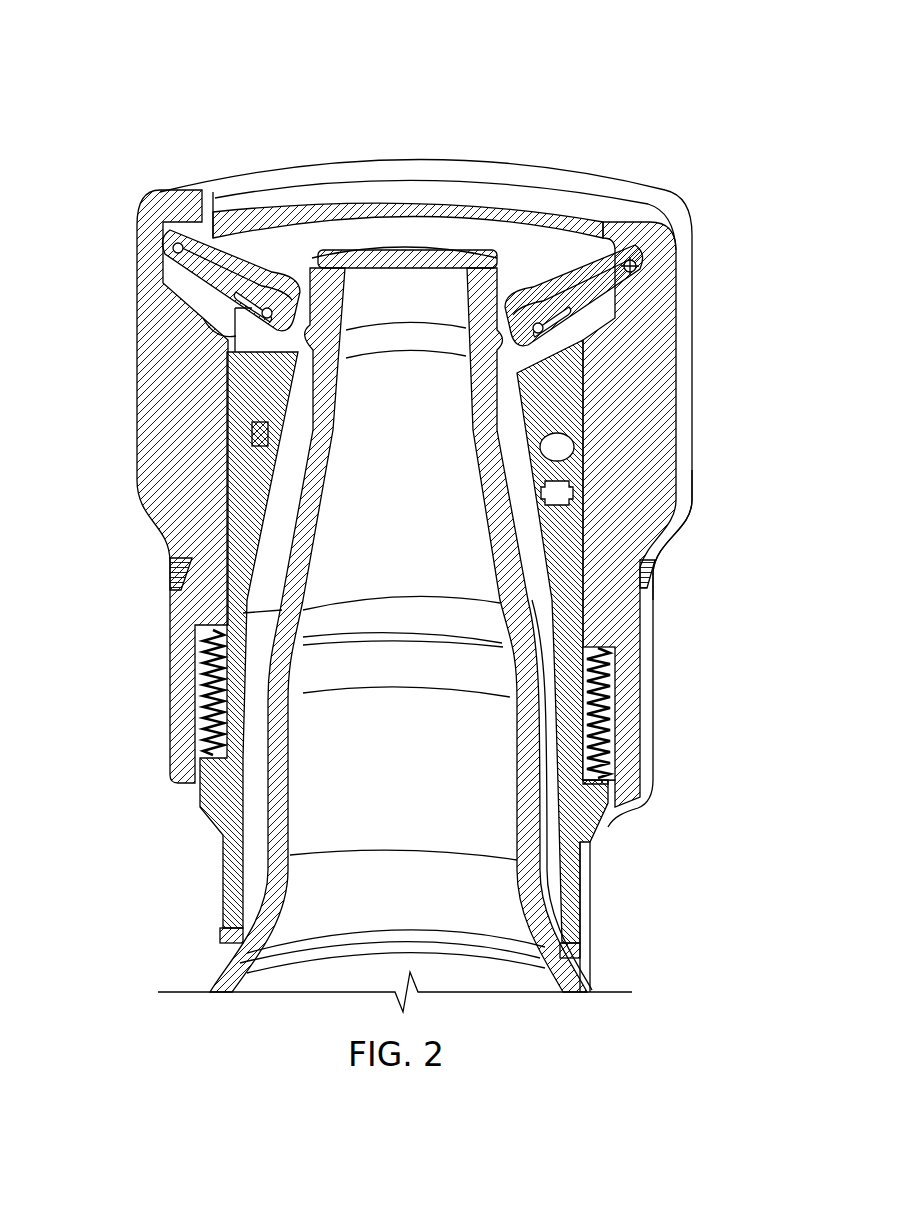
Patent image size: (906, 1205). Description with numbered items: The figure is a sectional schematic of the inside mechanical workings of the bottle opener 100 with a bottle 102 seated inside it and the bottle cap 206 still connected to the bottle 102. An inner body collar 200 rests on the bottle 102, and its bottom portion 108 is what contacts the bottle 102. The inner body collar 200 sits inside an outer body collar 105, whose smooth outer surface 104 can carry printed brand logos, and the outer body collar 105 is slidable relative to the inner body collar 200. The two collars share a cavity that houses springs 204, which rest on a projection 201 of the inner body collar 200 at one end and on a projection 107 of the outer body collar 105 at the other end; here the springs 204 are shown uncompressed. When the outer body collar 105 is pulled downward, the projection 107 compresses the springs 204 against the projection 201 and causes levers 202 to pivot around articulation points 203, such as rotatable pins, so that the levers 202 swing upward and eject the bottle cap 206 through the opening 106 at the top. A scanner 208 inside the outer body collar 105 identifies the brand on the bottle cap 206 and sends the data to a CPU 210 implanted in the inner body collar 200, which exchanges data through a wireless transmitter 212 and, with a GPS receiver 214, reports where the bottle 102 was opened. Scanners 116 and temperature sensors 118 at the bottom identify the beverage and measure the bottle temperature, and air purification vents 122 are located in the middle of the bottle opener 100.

The bottle opener 100 is at (118, 863).
The bottle 102 is at (530, 905).
The outer surface 104 is at (697, 334).
The outer body collar 105 is at (688, 517).
The opening 106 is at (116, 48).
The projection 107 is at (608, 645).
The bottom portion 108 is at (592, 919).
The scanners 116 is at (583, 950).
The temperature sensors 118 is at (217, 936).
The air purification vents 122 is at (168, 572).
The inner body collar 200 is at (248, 384).
The projection 201 is at (597, 788).
The levers 202 is at (606, 288).
The articulation points 203 is at (640, 265).
The springs 204 is at (614, 739).
The bottle cap 206 is at (215, 233).
The scanner 208 is at (234, 211).
The CPU 210 is at (578, 447).
The wireless transmitter 212 is at (245, 431).
The GPS receiver 214 is at (576, 494).